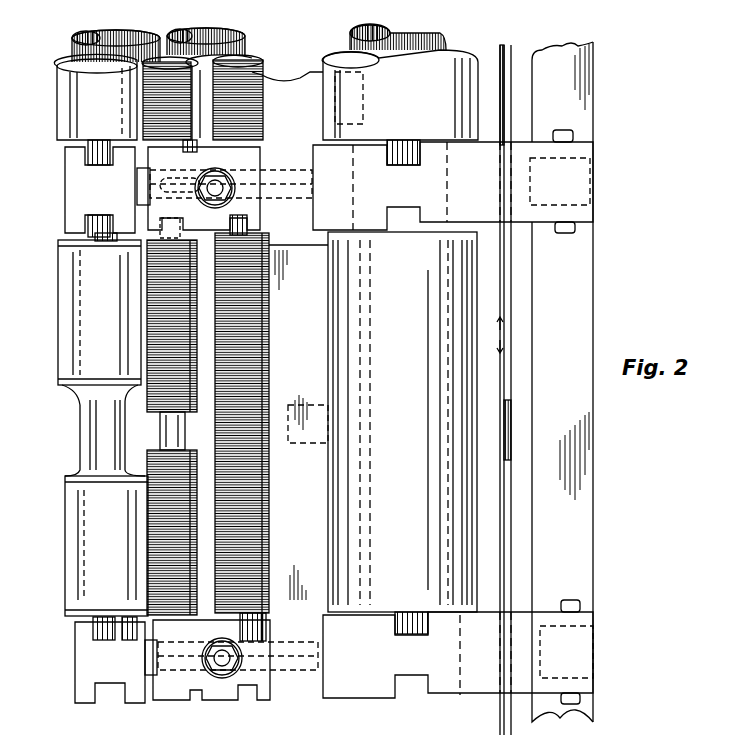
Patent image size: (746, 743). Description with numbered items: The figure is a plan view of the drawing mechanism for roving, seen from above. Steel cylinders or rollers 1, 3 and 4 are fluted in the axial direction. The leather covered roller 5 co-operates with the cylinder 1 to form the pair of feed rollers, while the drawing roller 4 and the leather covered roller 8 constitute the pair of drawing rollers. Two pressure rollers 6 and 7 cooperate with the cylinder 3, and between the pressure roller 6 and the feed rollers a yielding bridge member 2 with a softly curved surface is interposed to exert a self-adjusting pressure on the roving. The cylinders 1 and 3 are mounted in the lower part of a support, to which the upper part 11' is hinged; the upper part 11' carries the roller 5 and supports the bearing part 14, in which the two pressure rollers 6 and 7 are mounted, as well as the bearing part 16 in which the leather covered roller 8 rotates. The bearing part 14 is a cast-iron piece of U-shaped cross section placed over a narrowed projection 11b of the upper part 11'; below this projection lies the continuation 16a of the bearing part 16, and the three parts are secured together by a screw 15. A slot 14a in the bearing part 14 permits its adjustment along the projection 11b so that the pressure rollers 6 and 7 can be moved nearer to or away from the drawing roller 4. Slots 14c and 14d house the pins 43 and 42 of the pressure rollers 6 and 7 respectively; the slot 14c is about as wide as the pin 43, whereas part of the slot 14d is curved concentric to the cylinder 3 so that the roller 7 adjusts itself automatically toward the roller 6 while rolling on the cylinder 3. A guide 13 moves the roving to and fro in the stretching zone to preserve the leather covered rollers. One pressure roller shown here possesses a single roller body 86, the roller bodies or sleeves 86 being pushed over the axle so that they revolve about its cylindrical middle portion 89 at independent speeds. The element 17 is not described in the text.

The steel cylinder 1 is at (440, 38).
The yielding member 2 is at (298, 422).
The steel cylinder 3 is at (217, 78).
The drawing roller 4 is at (74, 50).
The leather covered roller 5 is at (400, 342).
The pressure roller 6 is at (252, 72).
The pressure roller 7 is at (160, 92).
The leather covered roller 8 is at (62, 105).
The upper part of support 11' is at (453, 420).
The projection 11b is at (296, 690).
The guide 13 is at (512, 372).
The bearing part 14 is at (218, 722).
The slot 14a is at (183, 672).
The slot 14c is at (247, 700).
The slot 14d is at (183, 152).
The screw 15 is at (260, 188).
The bearing part 16 is at (70, 185).
The continuation of bearing part 16a is at (285, 152).
The port 17 is at (311, 445).
The pin 42 is at (120, 250).
The pin 43 is at (258, 225).
The roller body 86 is at (175, 332).
The cylindrical middle portion 89 is at (168, 436).